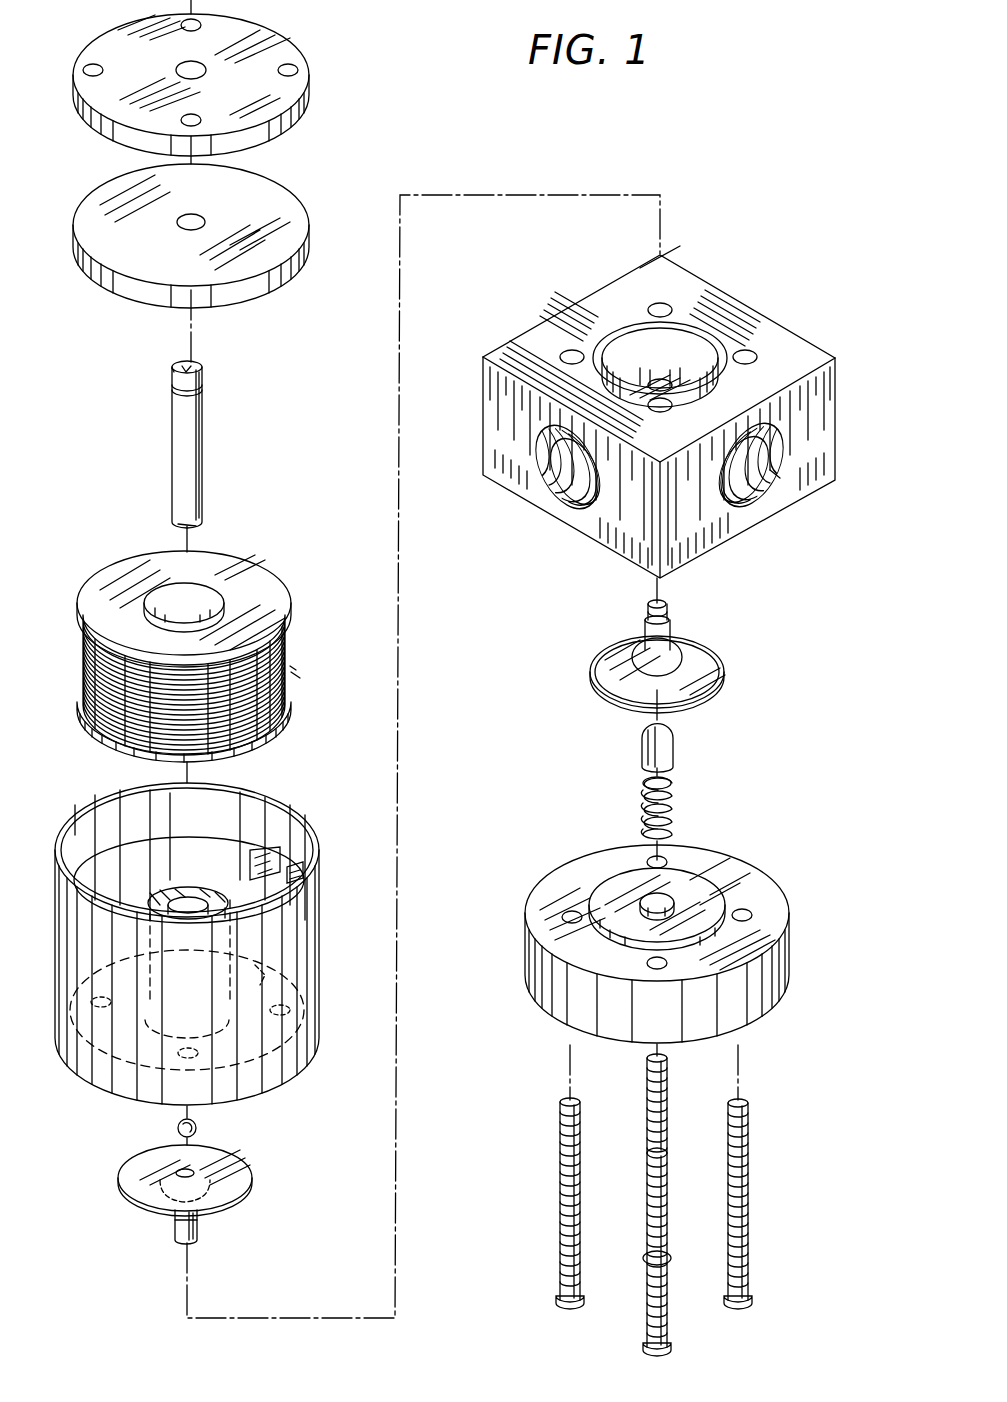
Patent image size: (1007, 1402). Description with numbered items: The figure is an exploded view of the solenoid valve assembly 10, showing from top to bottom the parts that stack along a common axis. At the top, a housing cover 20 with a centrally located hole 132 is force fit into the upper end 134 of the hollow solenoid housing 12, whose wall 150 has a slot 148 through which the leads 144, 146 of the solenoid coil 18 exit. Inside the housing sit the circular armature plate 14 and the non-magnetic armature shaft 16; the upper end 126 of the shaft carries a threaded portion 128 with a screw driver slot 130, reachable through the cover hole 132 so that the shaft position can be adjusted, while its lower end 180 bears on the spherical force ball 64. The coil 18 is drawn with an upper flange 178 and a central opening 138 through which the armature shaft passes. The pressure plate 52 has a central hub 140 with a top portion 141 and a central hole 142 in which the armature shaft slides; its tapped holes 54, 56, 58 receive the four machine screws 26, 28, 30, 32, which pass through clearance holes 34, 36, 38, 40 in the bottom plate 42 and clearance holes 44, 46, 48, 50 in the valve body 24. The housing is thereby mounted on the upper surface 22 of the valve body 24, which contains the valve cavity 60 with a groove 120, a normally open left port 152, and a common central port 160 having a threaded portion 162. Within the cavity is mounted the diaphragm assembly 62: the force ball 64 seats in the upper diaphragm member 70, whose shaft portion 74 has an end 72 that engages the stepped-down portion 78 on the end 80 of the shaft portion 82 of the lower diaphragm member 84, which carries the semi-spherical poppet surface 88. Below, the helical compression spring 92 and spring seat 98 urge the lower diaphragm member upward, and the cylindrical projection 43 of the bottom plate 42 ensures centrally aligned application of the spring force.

The solenoid valve assembly 10 is at (673, 935).
The solenoid housing 12 is at (196, 948).
The circular armature plate 14 is at (250, 296).
The armature shaft 16 is at (192, 441).
The solenoid coil 18 is at (225, 655).
The housing cover 20 is at (191, 78).
The upper surface 22 is at (690, 284).
The valve body 24 is at (685, 412).
The machine screw 26 is at (561, 1148).
The machine screw 28 is at (648, 1195).
The machine screw 30 is at (648, 1090).
The machine screw 32 is at (748, 1160).
The clearance hole 34 is at (568, 910).
The clearance hole 36 is at (647, 963).
The clearance hole 38 is at (667, 864).
The clearance hole 40 is at (752, 915).
The bottom plate 42 is at (673, 935).
The cylindrical projection 43 is at (700, 878).
The clearance hole 44 is at (565, 356).
The clearance hole 46 is at (670, 407).
The clearance hole 48 is at (655, 312).
The clearance hole 50 is at (745, 364).
The pressure plate 52 is at (300, 1034).
The tapped hole 54 is at (108, 1003).
The tapped hole 56 is at (178, 1052).
The tapped hole 58 is at (288, 1002).
The valve cavity 60 is at (718, 325).
The diaphragm assembly 62 is at (679, 648).
The spherical force ball 64 is at (197, 1128).
The upper diaphragm member 70 is at (203, 1207).
The end 72 is at (190, 1243).
The shaft portion 74 is at (198, 1228).
The stepped-down portion 78 is at (672, 617).
The end 80 is at (667, 606).
The shaft portion 82 is at (673, 633).
The lower diaphragm member 84 is at (725, 672).
The semi-spherical poppet surface 88 is at (617, 650).
The helical compression spring 92 is at (672, 788).
The spring seat 98 is at (674, 745).
The groove 120 is at (742, 350).
The upper end 126 is at (202, 400).
The threaded portion 128 is at (172, 388).
The screw driver slot 130 is at (196, 369).
The hole 132 is at (205, 76).
The upper end 134 is at (284, 810).
The spool bore 138 is at (280, 614).
The central hub 140 is at (212, 888).
The top portion 141 is at (210, 896).
The central hole 142 is at (150, 903).
The lead 144 is at (300, 673).
The lead 146 is at (293, 676).
The slot 148 is at (303, 860).
The wall 150 is at (319, 918).
The left port 152 is at (560, 505).
The central port 160 is at (765, 490).
The threaded portion 162 is at (790, 470).
The spool flange 178 is at (250, 582).
The lower end 180 is at (200, 520).